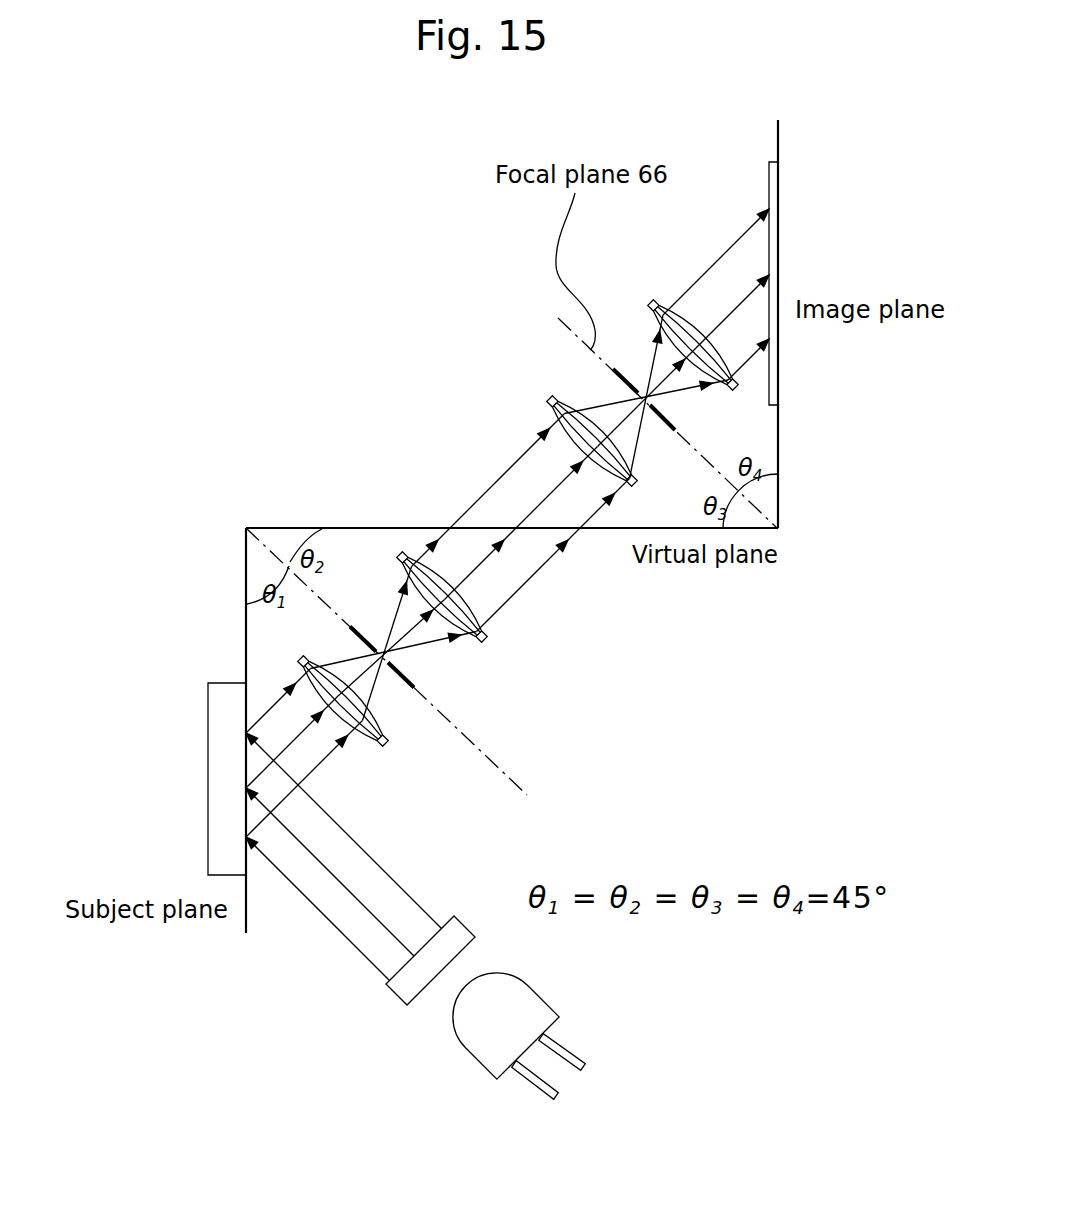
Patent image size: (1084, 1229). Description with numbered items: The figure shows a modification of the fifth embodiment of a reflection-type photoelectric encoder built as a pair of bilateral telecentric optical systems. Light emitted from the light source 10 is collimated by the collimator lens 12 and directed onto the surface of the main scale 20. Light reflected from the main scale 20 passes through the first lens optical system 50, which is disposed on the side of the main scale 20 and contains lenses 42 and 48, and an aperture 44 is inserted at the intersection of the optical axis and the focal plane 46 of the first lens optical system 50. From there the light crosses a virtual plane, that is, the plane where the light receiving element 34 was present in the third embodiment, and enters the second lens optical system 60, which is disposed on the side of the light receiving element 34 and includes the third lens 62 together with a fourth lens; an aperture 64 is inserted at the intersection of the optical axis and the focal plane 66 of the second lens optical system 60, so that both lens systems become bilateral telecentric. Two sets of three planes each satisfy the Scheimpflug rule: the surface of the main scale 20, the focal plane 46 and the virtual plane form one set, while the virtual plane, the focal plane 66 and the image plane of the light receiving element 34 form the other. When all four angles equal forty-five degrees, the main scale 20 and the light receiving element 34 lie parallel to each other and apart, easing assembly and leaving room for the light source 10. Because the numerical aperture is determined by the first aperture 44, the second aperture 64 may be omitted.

The light source 10 is at (466, 1048).
The collimator lens 12 is at (402, 994).
The main scale 20 is at (208, 803).
The light receiving element 34 is at (780, 200).
The first lens 42 is at (392, 738).
The aperture 44 is at (410, 676).
The focal plane 46 is at (477, 671).
The second lens 48 is at (475, 607).
The first lens optical system 50 is at (410, 691).
The second lens optical system 60 is at (591, 420).
The third lens 62 is at (548, 402).
The aperture 64 is at (596, 368).
The focal plane 66 is at (662, 329).